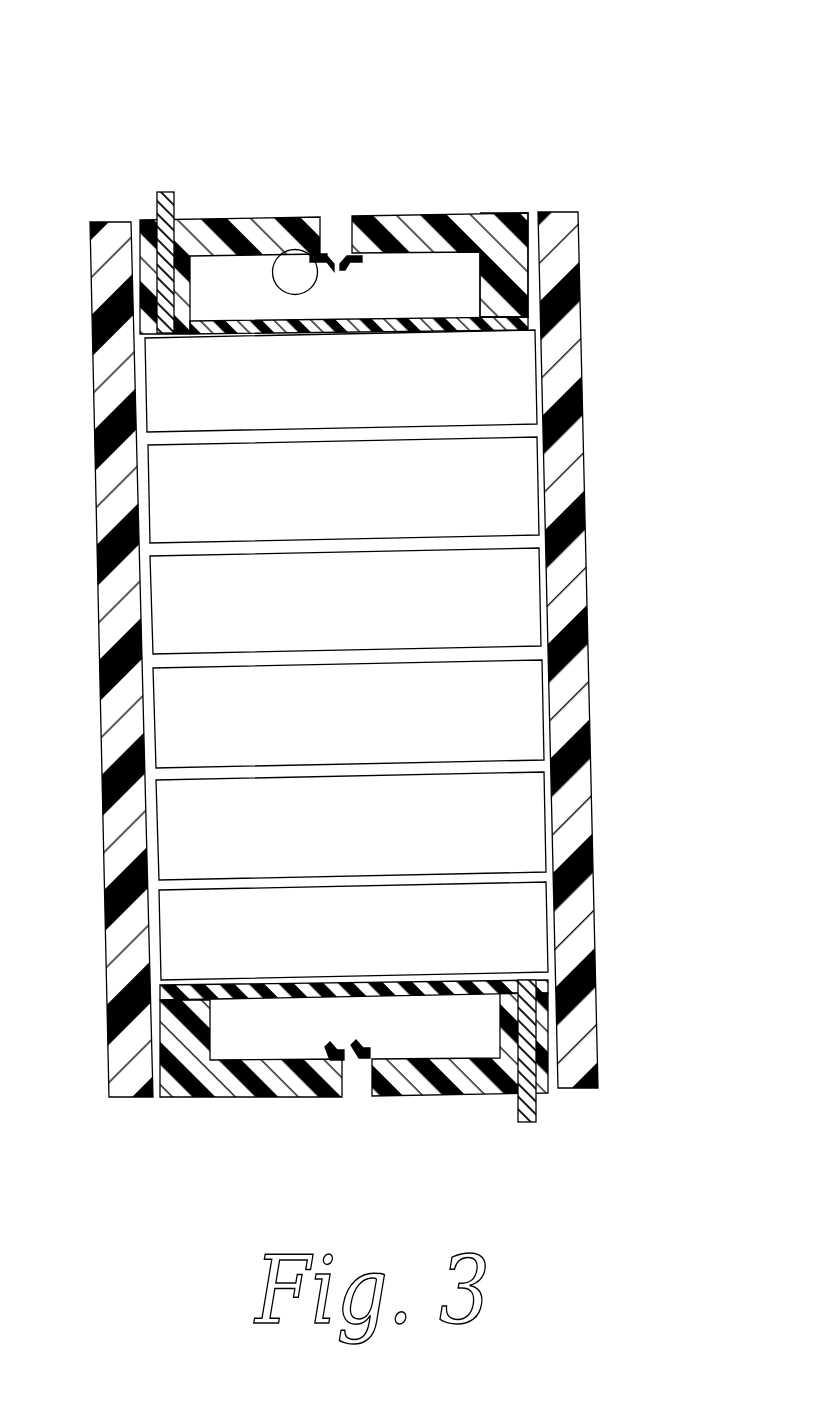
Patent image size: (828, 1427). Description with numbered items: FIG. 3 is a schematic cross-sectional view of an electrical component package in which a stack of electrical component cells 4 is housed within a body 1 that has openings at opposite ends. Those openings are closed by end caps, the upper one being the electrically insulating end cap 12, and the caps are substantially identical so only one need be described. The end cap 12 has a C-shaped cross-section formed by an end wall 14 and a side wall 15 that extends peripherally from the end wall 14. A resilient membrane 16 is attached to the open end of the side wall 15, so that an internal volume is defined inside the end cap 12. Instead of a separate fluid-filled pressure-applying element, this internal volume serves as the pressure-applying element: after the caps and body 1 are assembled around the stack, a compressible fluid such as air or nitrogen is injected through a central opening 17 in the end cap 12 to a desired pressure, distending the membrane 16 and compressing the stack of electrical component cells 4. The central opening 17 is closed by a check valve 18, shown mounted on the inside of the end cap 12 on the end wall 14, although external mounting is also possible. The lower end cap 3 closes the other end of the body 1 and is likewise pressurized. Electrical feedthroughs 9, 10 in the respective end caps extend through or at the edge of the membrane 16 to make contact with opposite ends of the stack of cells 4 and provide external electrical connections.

The body 1 is at (577, 803).
The end cap 3 is at (445, 1082).
The stack of electrical component cells 4 is at (510, 487).
The electrical feedthrough 9 is at (163, 193).
The electrical feedthrough 10 is at (528, 1122).
The end cap 12 is at (457, 177).
The end wall 14 is at (495, 212).
The side wall 15 is at (513, 290).
The resilient membrane 16 is at (237, 320).
The central opening 17 is at (337, 227).
The check valve 18 is at (292, 250).